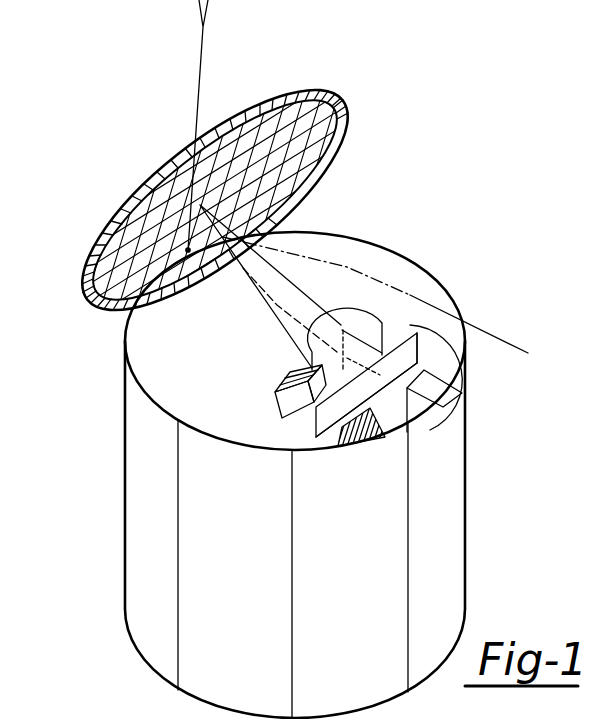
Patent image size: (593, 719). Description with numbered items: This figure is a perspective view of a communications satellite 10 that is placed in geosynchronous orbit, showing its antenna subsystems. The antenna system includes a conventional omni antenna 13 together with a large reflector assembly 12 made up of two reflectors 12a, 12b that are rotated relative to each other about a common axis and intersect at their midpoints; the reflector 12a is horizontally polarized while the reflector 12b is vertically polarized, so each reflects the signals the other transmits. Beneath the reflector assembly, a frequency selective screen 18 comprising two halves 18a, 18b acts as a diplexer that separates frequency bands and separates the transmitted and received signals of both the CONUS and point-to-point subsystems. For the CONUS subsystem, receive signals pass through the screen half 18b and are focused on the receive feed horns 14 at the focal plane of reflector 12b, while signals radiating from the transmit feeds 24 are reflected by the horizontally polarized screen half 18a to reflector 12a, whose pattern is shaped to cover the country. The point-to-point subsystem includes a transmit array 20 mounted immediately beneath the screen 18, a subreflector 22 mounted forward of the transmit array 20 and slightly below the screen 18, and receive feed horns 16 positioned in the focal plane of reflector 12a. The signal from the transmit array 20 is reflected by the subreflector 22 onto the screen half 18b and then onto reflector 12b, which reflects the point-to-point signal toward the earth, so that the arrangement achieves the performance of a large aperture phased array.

The communications satellite 10 is at (452, 576).
The reflector assembly 12 is at (93, 238).
The reflector 12a is at (340, 138).
The reflector 12b is at (272, 92).
The omni antenna 13 is at (198, 64).
The receive feed horns 14 is at (432, 391).
The receive feed horns 16 is at (366, 445).
The frequency selective screen 18 is at (414, 324).
The screen half 18a is at (316, 440).
The screen half 18b is at (410, 357).
The transmit array 20 is at (458, 424).
The subreflector 22 is at (370, 335).
The transmit feeds 24 is at (276, 403).